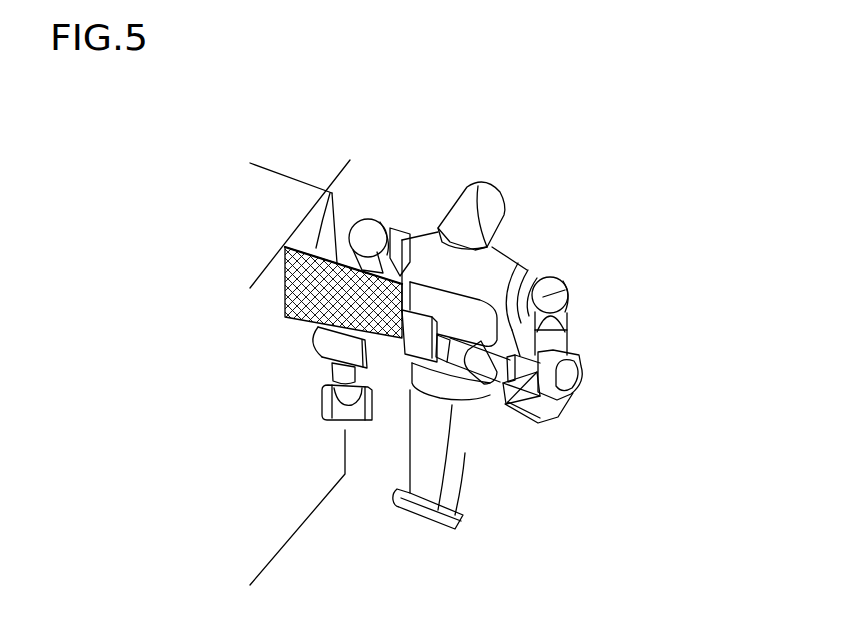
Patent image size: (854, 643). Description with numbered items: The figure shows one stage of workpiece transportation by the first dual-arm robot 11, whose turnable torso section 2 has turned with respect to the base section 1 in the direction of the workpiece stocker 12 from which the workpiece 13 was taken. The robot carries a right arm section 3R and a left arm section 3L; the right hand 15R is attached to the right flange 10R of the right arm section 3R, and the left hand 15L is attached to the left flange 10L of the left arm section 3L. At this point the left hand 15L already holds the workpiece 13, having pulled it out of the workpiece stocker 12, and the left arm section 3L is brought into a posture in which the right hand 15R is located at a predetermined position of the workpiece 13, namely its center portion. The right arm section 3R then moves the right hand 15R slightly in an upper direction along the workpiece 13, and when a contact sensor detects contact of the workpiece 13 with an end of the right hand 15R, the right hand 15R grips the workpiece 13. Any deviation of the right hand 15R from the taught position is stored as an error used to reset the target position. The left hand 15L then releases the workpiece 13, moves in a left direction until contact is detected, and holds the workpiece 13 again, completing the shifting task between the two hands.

The base section 1 is at (465, 453).
The turnable torso section 2 is at (438, 502).
The right arm section 3R is at (403, 238).
The left arm section 3L is at (567, 290).
The right flange 10R is at (320, 385).
The left flange 10L is at (412, 365).
The first dual-arm robot 11 is at (504, 188).
The workpiece stocker 12 is at (287, 178).
The workpiece 13 is at (337, 178).
The right hand 15R is at (335, 355).
The left hand 15L is at (408, 337).